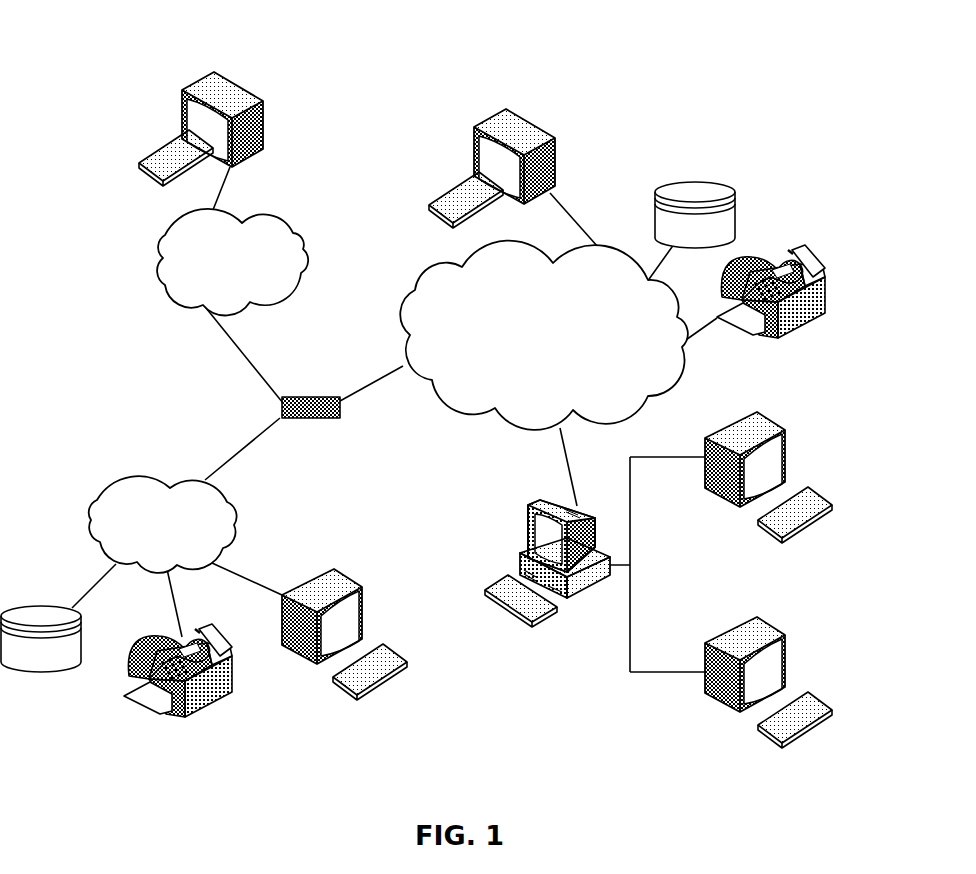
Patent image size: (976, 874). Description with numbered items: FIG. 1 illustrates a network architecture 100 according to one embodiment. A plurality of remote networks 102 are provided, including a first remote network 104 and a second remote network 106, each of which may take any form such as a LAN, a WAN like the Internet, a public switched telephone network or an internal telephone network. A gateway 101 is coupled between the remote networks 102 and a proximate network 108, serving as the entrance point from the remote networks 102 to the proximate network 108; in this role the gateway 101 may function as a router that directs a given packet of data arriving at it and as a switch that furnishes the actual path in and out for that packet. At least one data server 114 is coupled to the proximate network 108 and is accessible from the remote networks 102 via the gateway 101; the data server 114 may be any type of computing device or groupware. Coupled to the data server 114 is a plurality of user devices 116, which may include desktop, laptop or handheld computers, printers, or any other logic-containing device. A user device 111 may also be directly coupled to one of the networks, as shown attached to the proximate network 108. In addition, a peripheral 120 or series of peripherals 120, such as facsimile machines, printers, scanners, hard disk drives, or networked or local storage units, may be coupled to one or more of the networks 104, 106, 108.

The network architecture 100 is at (113, 54).
The gateway 101 is at (292, 397).
The remote networks 102 is at (138, 324).
The first remote network 104 is at (96, 500).
The second remote network 106 is at (298, 233).
The proximate network 108 is at (645, 397).
The user device 111 is at (557, 140).
The data server 114 is at (530, 521).
The user devices 116 is at (263, 103).
The peripheral 120 is at (735, 190).